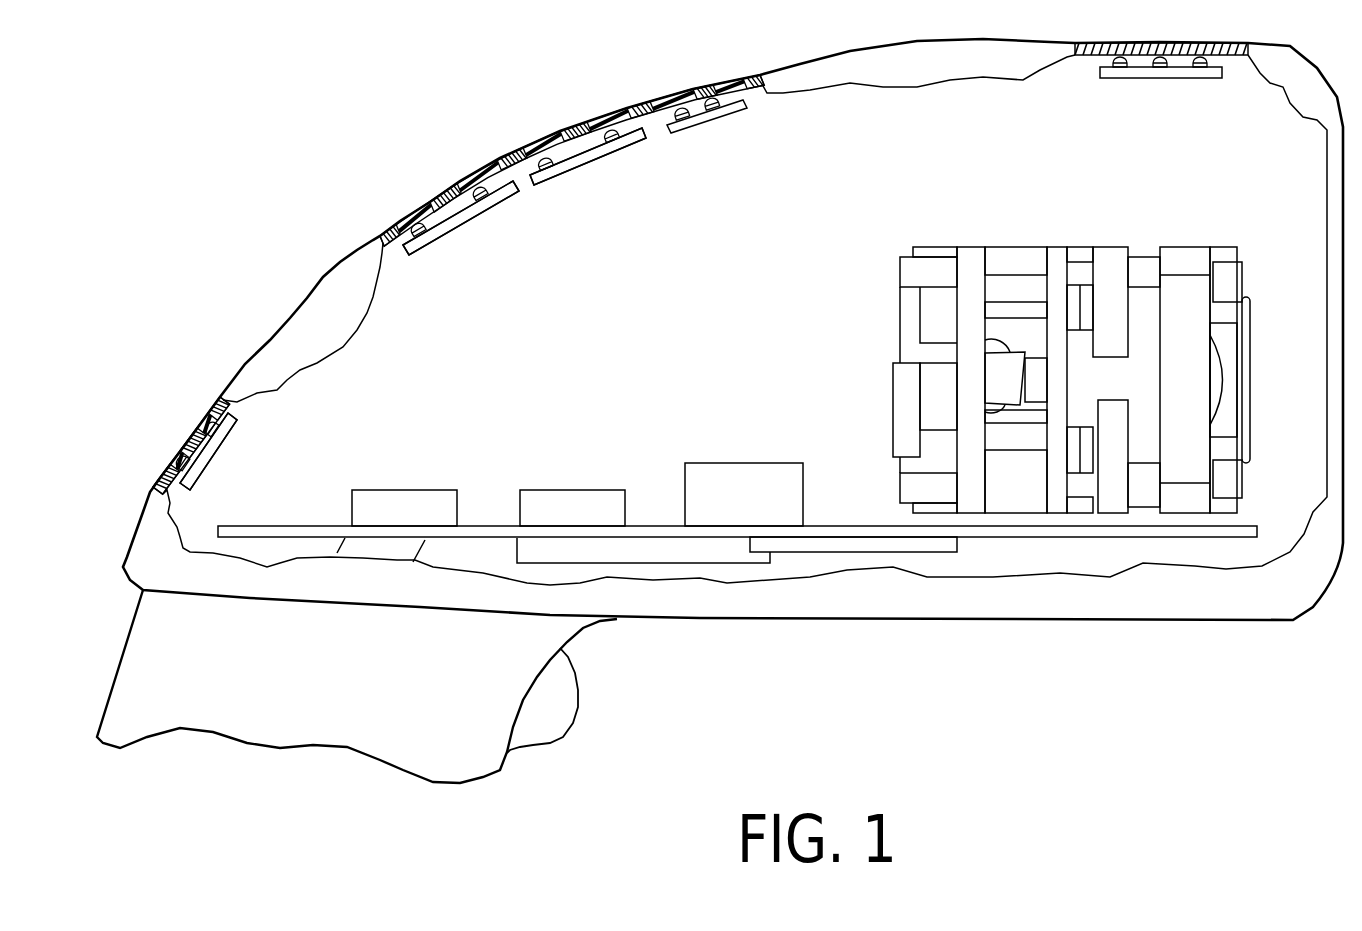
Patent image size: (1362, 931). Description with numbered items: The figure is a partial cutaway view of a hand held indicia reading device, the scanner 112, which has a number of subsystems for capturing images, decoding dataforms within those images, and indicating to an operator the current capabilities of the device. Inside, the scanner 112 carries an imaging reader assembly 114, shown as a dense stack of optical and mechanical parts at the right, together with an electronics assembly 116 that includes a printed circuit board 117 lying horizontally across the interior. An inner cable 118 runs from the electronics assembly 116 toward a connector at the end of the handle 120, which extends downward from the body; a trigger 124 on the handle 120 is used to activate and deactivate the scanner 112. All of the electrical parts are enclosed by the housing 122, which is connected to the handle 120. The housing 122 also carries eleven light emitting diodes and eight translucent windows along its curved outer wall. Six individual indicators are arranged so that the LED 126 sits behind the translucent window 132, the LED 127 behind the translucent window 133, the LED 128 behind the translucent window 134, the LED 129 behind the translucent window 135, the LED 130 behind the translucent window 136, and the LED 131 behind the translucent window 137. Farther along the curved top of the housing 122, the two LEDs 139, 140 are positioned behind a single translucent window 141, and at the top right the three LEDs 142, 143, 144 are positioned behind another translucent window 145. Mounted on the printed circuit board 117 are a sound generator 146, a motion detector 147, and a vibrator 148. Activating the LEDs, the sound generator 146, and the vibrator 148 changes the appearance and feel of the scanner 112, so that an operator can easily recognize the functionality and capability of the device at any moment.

The scanner 112 is at (326, 68).
The imaging reader assembly 114 is at (1248, 218).
The electronics assembly 116 is at (603, 393).
The printed circuit board 117 is at (312, 525).
The inner cable 118 is at (417, 557).
The handle 120 is at (118, 665).
The housing 122 is at (283, 333).
The trigger 124 is at (580, 713).
The LED 126 is at (167, 493).
The LED 127 is at (253, 407).
The LED 128 is at (382, 240).
The LED 129 is at (467, 215).
The LED 130 is at (534, 182).
The LED 131 is at (600, 157).
The translucent window 132 is at (177, 453).
The translucent window 133 is at (197, 427).
The translucent window 134 is at (397, 227).
The translucent window 135 is at (470, 183).
The translucent window 136 is at (533, 147).
The translucent window 137 is at (620, 113).
The LED 139 is at (673, 118).
The LED 140 is at (702, 116).
The translucent window 141 is at (700, 83).
The LED 142 is at (1113, 60).
The LED 143 is at (1150, 67).
The LED 144 is at (1207, 60).
The translucent window 145 is at (1160, 42).
The sound generator 146 is at (415, 488).
The motion detector 147 is at (585, 488).
The vibrator 148 is at (727, 463).